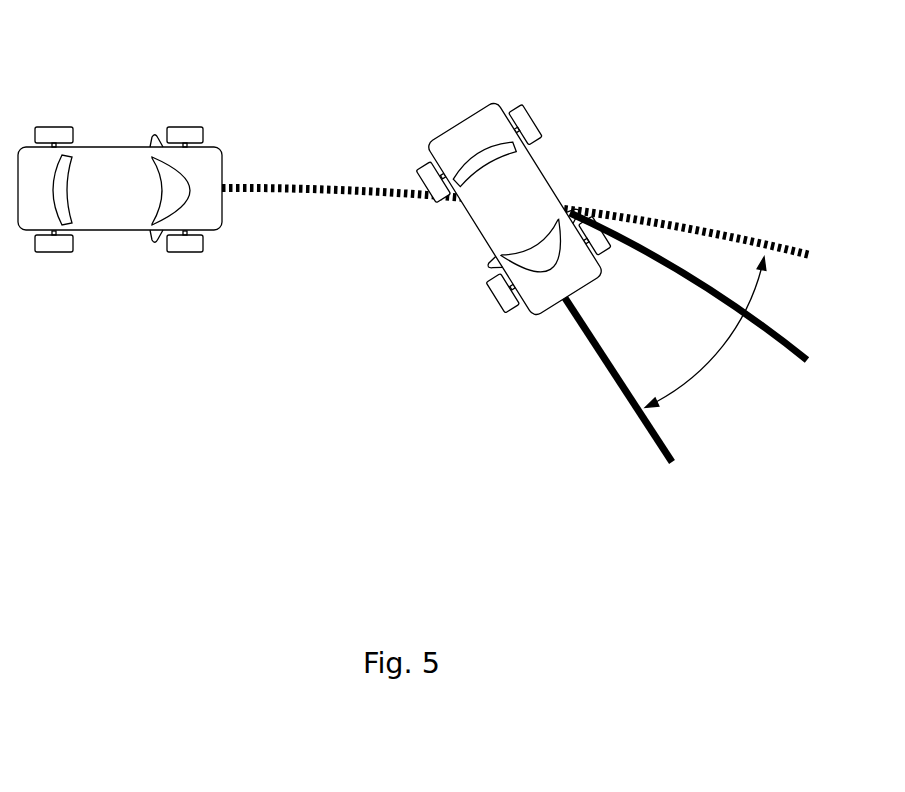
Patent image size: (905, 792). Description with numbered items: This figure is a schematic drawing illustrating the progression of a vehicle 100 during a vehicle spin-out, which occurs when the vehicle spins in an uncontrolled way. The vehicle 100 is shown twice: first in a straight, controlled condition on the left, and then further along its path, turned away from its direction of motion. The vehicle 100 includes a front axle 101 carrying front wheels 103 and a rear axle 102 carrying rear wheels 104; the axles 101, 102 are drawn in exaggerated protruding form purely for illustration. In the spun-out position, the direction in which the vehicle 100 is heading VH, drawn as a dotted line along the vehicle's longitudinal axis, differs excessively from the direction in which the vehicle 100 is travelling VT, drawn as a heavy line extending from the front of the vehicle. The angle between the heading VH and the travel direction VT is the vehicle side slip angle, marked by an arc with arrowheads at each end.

The vehicle 100 is at (100, 158).
The front axle 101 is at (187, 238).
The rear axle 102 is at (53, 238).
The front wheels 103 is at (195, 133).
The rear wheels 104 is at (63, 128).
The direction of vehicle heading VH is at (730, 240).
The direction of vehicle travel VT is at (615, 390).